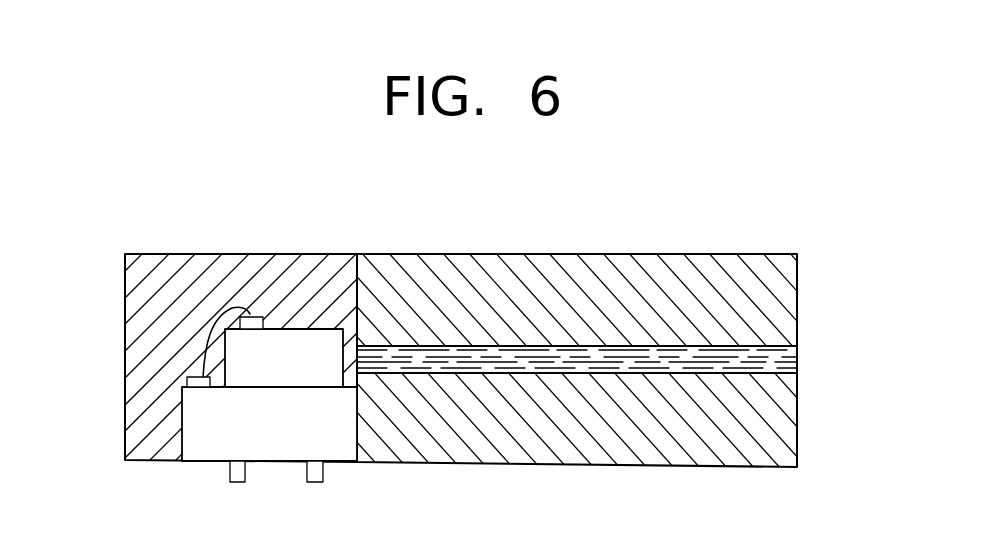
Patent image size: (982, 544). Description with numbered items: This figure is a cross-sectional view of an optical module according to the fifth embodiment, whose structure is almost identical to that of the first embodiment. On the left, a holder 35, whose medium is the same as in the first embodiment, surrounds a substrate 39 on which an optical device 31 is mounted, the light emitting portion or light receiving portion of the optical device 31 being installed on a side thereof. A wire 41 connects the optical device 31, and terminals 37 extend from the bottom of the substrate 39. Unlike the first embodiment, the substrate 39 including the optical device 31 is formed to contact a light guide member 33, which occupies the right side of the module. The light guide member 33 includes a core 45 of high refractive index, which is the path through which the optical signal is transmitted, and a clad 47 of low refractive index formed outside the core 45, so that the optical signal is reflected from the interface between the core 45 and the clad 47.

The optical device 31 is at (292, 340).
The light guide member 33 is at (696, 242).
The holder 35 is at (140, 352).
The terminals 37 is at (308, 480).
The substrate 39 is at (210, 450).
The wire 41 is at (207, 373).
The core 45 is at (797, 365).
The clad 47 is at (790, 303).